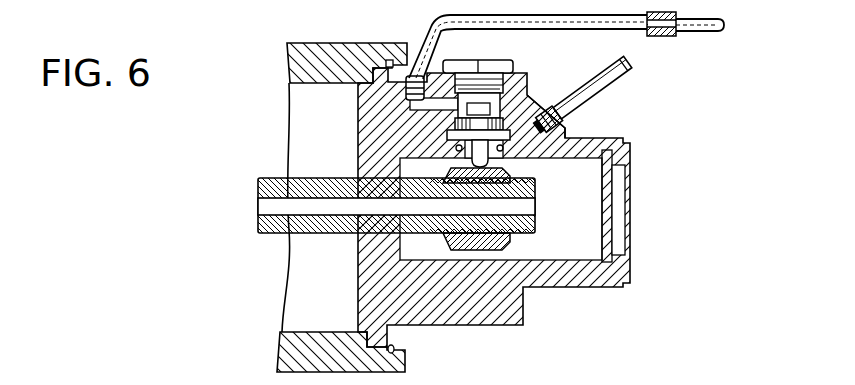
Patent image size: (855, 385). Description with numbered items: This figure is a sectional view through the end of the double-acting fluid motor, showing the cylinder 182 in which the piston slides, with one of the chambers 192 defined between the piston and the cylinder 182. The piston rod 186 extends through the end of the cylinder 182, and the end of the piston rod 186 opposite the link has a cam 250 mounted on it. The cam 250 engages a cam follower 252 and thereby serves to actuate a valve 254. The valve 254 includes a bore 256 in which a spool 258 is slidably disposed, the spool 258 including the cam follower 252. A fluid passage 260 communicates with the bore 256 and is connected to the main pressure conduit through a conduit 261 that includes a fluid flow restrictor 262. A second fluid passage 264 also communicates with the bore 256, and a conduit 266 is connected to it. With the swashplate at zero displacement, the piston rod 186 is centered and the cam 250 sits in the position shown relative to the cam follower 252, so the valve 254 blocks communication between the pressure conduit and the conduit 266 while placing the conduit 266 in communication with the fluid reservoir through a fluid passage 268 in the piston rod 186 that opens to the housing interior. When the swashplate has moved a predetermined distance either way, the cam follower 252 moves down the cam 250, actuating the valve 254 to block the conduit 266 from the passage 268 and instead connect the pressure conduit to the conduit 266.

The cylinder 182 is at (285, 356).
The piston rod 186 is at (278, 179).
The chamber 192 is at (306, 289).
The cam 250 is at (510, 236).
The cam follower 252 is at (490, 163).
The valve 254 is at (441, 122).
The bore 256 is at (530, 71).
The spool 258 is at (568, 136).
The fluid passage 260 is at (412, 112).
The conduit 261 is at (722, 22).
The fluid flow restrictor 262 is at (675, 36).
The fluid passage 264 is at (538, 104).
The conduit 266 is at (620, 77).
The fluid passage 268 is at (270, 210).